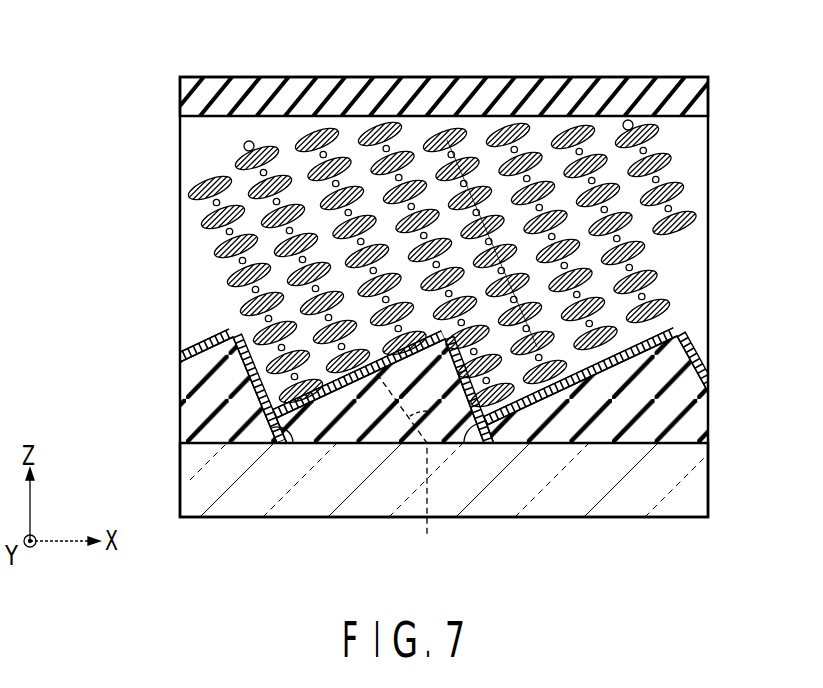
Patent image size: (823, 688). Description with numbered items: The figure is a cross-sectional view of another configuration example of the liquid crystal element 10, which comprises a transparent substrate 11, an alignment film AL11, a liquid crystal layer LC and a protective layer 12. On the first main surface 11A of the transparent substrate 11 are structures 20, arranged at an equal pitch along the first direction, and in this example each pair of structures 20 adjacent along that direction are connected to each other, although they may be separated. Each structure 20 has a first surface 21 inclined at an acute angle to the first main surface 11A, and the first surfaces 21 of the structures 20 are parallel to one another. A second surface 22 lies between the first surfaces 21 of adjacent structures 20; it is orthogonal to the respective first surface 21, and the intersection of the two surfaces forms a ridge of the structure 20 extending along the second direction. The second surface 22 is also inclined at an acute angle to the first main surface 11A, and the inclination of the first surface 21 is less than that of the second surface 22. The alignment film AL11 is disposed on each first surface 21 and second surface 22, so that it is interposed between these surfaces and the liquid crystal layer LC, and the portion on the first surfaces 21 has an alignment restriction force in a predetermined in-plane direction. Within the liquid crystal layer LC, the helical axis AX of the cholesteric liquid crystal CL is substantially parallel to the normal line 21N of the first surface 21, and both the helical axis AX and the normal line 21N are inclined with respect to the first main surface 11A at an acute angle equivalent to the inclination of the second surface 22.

The liquid crystal element 10 is at (222, 45).
The protective layer 12 is at (192, 110).
The transparent substrate 11 is at (190, 488).
The first main surface 11A is at (215, 430).
The structure 20 is at (443, 410).
The first surface 21 is at (218, 335).
The second surface 22 is at (252, 357).
The alignment film AL11 is at (192, 347).
The liquid crystal layer LC is at (414, 233).
The helical axis AX is at (465, 140).
The cholesteric liquid crystal CL is at (473, 142).
The normal line 21N is at (413, 468).